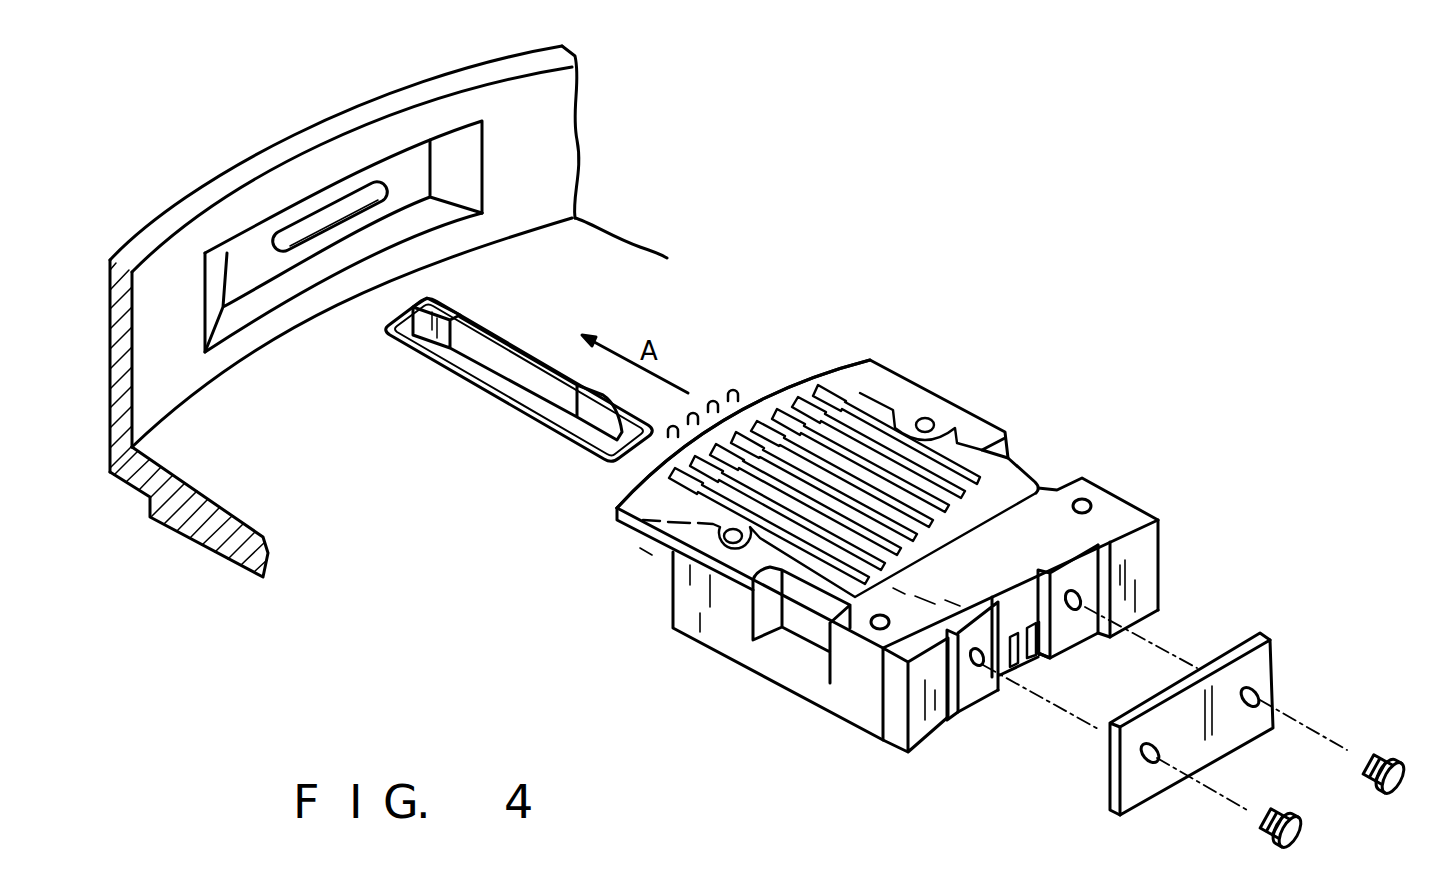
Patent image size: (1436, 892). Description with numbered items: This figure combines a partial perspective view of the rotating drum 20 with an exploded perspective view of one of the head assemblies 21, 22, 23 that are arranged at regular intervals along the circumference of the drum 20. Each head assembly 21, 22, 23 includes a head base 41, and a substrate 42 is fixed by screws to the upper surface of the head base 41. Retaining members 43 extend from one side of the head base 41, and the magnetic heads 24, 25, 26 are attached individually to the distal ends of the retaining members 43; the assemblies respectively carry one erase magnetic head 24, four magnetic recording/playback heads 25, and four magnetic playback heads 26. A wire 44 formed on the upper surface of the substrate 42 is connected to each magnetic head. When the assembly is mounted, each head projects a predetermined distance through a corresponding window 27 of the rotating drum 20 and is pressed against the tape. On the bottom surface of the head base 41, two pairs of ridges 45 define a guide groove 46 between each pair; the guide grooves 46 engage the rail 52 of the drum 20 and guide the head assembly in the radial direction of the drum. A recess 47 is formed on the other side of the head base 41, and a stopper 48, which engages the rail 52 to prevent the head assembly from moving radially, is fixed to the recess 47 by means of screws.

The rotating drum 20 is at (176, 203).
The window 27 is at (338, 212).
The rail 52 is at (430, 336).
The head assembly 21 is at (925, 533).
The head assembly 22 is at (925, 533).
The head assembly 23 is at (925, 533).
The erase magnetic head 24 is at (712, 403).
The magnetic recording/playback head 25 is at (693, 418).
The magnetic playback head 26 is at (723, 401).
The retaining member 43 is at (750, 398).
The wire 44 is at (993, 483).
The substrate 42 is at (1094, 497).
The head base 41 is at (858, 722).
The ridge 45 is at (1017, 665).
The guide groove 46 is at (1008, 663).
The recess 47 is at (1125, 567).
The stopper 48 is at (1273, 657).